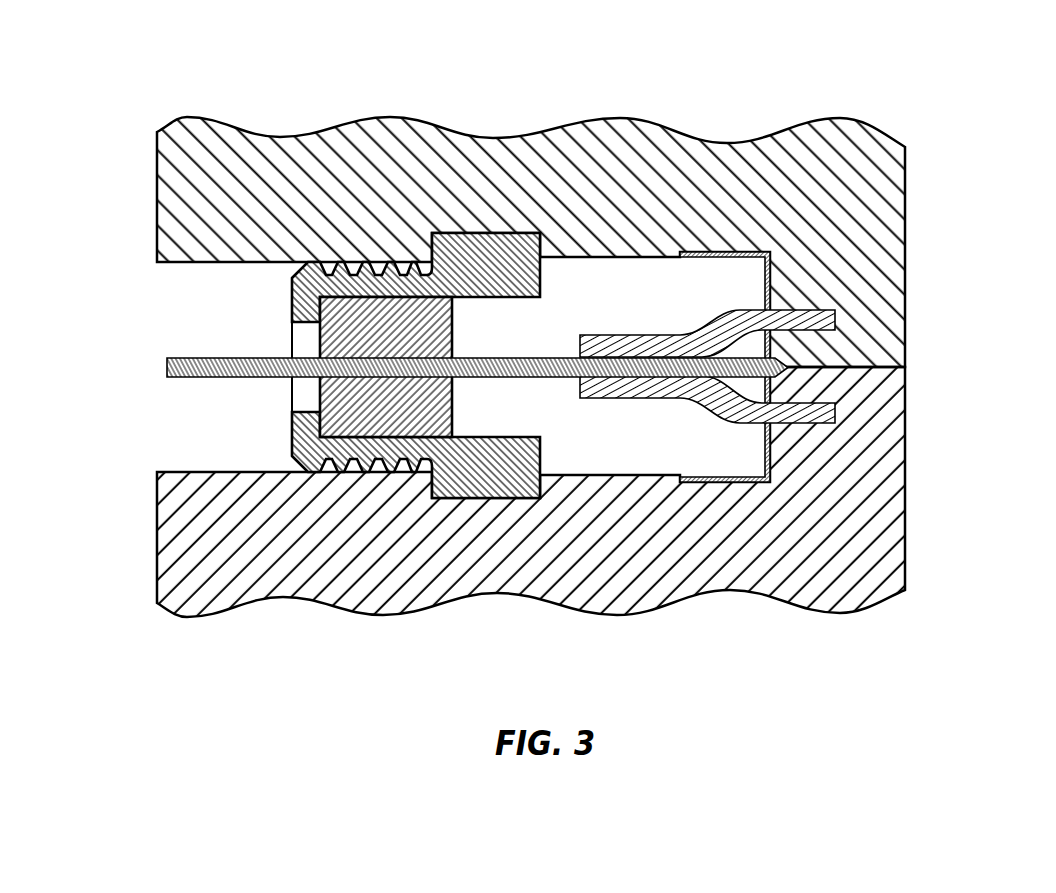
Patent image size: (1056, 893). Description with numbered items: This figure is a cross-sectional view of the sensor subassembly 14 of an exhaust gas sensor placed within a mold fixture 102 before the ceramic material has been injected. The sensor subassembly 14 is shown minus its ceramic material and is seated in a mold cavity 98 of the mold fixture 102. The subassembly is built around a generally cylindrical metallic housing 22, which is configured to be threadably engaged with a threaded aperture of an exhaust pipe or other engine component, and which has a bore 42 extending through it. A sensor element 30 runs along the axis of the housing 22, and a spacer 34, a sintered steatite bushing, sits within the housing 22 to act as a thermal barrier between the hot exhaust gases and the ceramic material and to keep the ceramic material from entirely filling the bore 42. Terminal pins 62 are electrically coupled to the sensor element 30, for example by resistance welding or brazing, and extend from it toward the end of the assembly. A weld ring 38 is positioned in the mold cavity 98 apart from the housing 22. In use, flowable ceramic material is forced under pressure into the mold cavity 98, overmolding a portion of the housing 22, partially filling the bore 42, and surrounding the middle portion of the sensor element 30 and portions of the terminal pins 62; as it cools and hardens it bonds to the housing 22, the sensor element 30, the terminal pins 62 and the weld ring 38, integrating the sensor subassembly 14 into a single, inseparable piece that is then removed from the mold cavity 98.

The sensor subassembly 14 is at (150, 309).
The housing 22 is at (470, 497).
The sensor element 30 is at (567, 357).
The spacer 34 is at (352, 317).
The weld ring 38 is at (717, 482).
The bore 42 is at (486, 438).
The terminal pins 62 is at (825, 310).
The mold cavity 98 is at (610, 307).
The mold fixture 102 is at (878, 153).